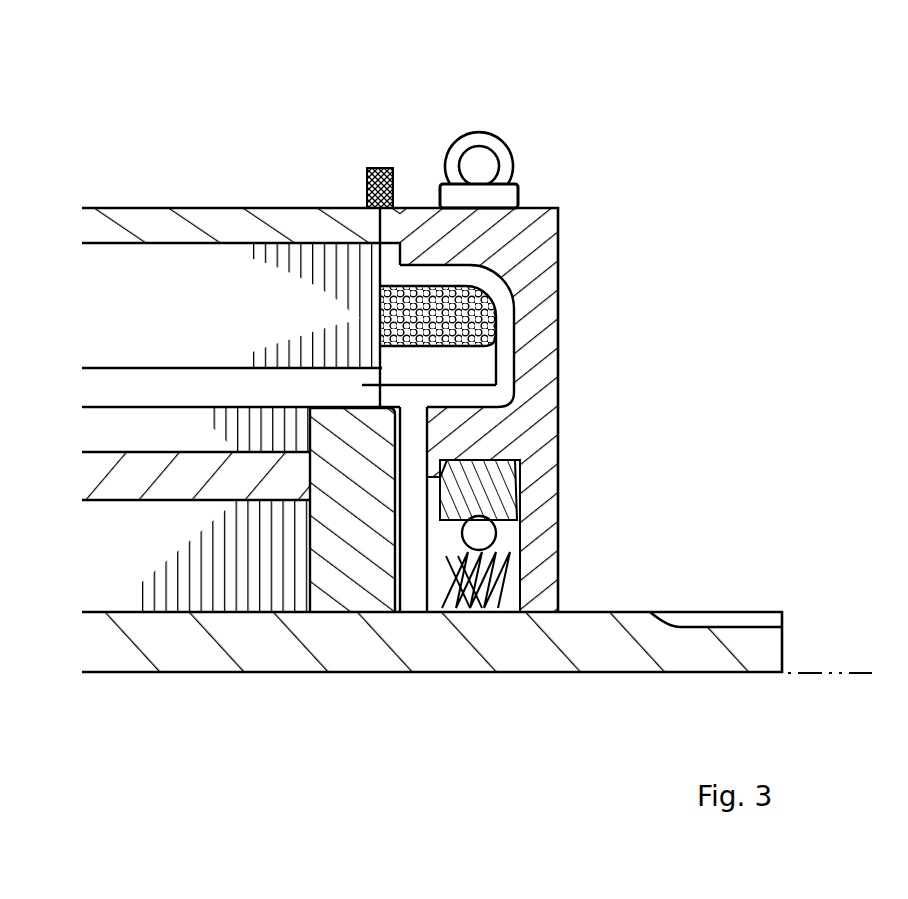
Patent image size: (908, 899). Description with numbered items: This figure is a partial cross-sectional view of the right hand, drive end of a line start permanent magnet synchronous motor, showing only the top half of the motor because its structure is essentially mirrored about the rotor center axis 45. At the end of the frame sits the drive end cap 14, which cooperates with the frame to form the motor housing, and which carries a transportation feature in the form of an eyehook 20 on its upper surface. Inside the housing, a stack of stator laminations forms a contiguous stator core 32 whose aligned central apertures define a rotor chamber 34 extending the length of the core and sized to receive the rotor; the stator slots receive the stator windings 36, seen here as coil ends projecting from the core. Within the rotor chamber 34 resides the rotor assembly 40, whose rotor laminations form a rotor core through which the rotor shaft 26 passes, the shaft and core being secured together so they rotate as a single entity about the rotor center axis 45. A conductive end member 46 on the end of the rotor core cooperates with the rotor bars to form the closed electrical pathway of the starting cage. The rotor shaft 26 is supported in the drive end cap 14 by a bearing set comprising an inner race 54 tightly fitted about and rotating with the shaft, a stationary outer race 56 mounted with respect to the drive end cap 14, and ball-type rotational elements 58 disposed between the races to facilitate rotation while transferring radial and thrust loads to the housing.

The drive end cap 14 is at (557, 480).
The eyehook 20 is at (507, 148).
The rotor shaft 26 is at (768, 652).
The stator core 32 is at (170, 307).
The rotor chamber 34 is at (557, 387).
The stator windings 36 is at (448, 280).
The rotor assembly 40 is at (122, 560).
The rotor center axis 45 is at (846, 683).
The end member 46 is at (343, 590).
The inner race 54 is at (476, 550).
The outer race 56 is at (520, 517).
The rotational elements 58 is at (477, 590).